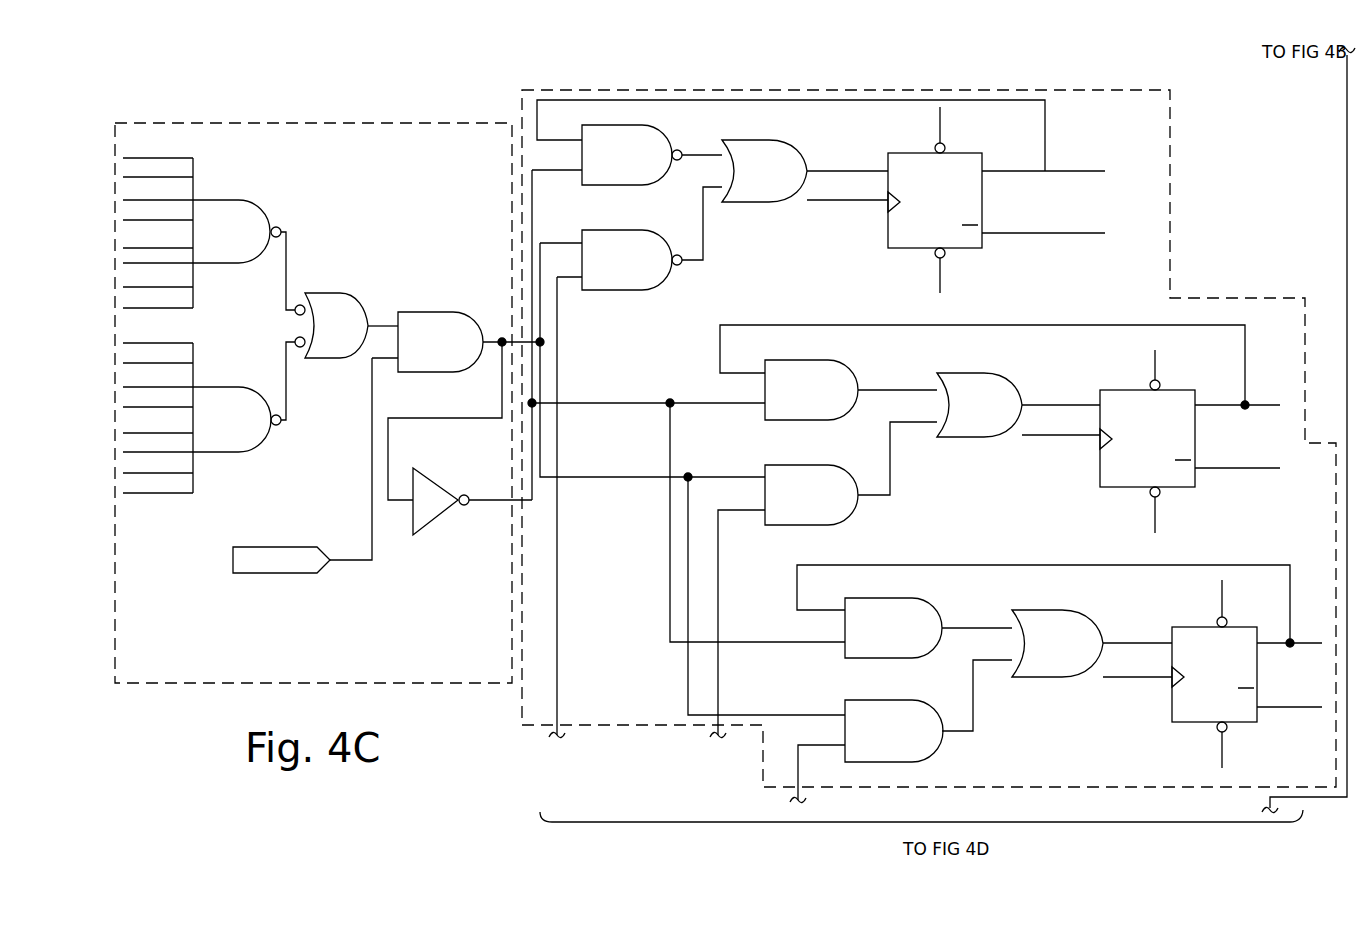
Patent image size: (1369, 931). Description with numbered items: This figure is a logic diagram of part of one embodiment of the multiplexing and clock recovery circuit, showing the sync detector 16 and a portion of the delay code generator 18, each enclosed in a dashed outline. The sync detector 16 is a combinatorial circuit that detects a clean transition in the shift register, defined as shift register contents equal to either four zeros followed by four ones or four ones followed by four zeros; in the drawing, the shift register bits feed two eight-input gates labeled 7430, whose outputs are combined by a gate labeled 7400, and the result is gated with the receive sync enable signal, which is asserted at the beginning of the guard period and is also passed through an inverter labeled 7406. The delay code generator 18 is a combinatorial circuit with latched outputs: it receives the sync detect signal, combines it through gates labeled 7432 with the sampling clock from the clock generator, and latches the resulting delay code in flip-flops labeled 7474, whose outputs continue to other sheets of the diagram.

The sync detector 16 is at (380, 684).
The delay code generator 18 is at (1132, 788).
The 8-input NAND gate 7430 is at (214, 323).
The NAND gate 7400 is at (343, 326).
The inverter 7406 is at (463, 500).
The OR gate 7432 is at (940, 408).
The D flip-flop 7474 is at (1106, 437).